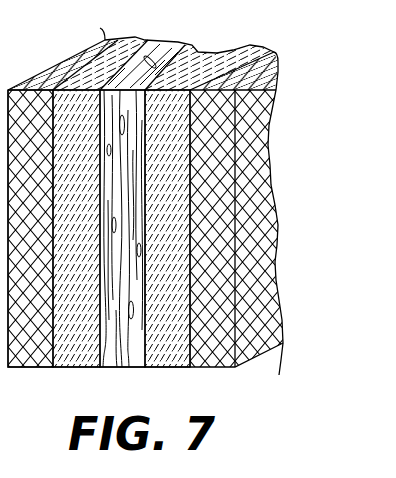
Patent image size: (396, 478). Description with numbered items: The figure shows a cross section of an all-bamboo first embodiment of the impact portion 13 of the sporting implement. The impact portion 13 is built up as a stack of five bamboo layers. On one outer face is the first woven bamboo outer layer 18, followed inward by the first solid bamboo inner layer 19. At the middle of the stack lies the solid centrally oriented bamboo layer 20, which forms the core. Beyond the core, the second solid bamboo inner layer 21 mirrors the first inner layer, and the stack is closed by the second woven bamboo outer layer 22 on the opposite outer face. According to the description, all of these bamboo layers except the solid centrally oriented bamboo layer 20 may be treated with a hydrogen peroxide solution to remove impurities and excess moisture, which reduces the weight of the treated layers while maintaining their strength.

The impact portion 13 is at (242, 25).
The first woven bamboo outer layer 18 is at (53, 115).
The first solid bamboo inner layer 19 is at (83, 148).
The solid centrally oriented bamboo layer 20 is at (120, 195).
The second solid bamboo inner layer 21 is at (167, 243).
The second woven bamboo outer layer 22 is at (212, 283).